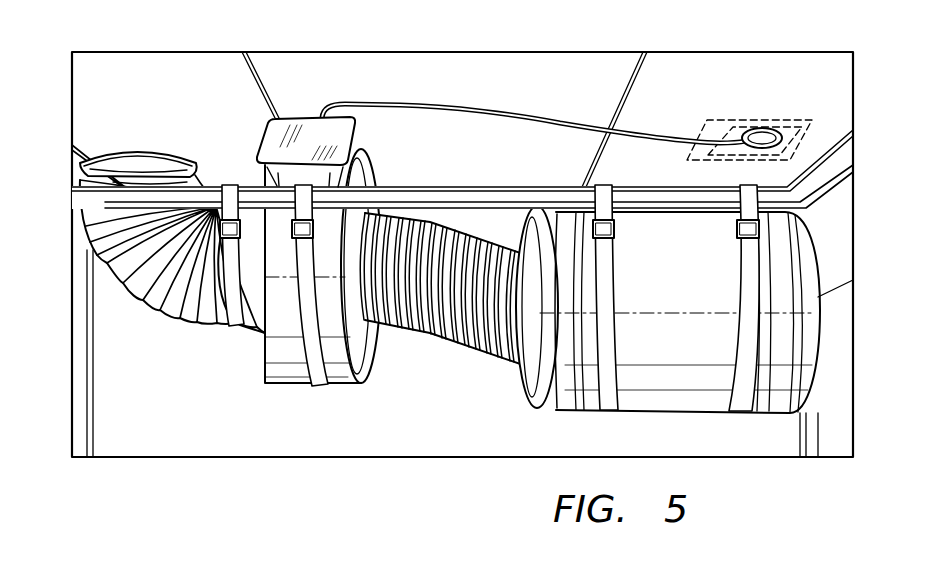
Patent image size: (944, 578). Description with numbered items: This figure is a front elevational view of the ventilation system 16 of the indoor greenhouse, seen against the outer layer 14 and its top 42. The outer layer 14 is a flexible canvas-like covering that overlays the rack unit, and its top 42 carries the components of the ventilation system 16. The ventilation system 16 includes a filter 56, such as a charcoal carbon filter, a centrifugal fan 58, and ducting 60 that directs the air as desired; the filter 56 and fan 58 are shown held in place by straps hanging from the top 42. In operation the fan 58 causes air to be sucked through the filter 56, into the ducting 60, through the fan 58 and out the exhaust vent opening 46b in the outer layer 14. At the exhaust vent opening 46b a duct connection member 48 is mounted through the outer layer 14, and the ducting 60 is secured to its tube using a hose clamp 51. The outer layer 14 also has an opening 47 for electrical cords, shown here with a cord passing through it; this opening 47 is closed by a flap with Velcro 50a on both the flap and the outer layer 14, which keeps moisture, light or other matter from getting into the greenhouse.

The outer layer 14 is at (160, 386).
The ventilation system 16 is at (100, 100).
The top 42 is at (492, 96).
The exhaust vent opening 46b is at (131, 142).
The opening for electrical cords 47 is at (768, 132).
The duct connection member 48 is at (195, 162).
The Velcro 50a is at (752, 117).
The hose clamp 51 is at (142, 150).
The filter 56 is at (692, 297).
The centrifugal fan 58 is at (282, 357).
The ducting 60 is at (113, 259).